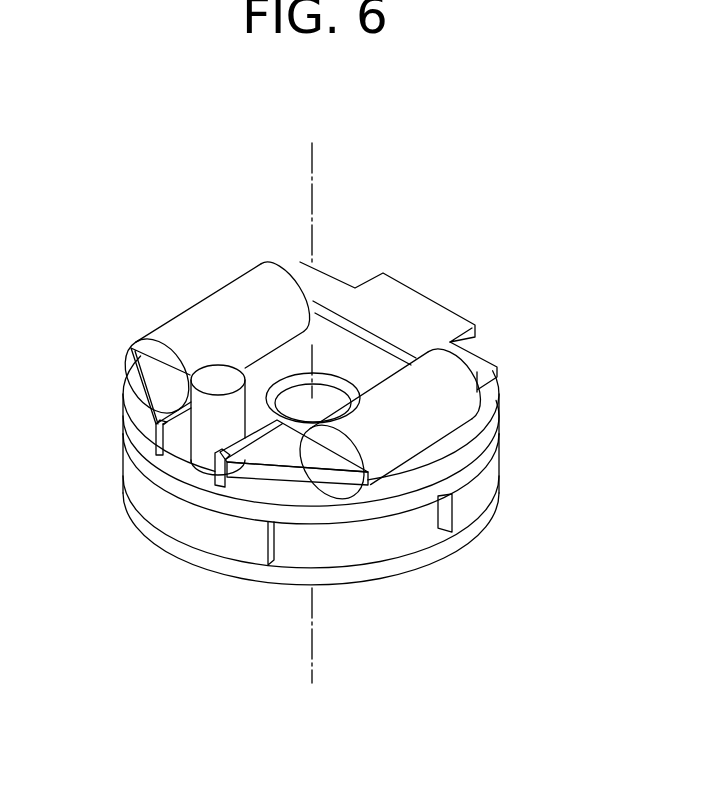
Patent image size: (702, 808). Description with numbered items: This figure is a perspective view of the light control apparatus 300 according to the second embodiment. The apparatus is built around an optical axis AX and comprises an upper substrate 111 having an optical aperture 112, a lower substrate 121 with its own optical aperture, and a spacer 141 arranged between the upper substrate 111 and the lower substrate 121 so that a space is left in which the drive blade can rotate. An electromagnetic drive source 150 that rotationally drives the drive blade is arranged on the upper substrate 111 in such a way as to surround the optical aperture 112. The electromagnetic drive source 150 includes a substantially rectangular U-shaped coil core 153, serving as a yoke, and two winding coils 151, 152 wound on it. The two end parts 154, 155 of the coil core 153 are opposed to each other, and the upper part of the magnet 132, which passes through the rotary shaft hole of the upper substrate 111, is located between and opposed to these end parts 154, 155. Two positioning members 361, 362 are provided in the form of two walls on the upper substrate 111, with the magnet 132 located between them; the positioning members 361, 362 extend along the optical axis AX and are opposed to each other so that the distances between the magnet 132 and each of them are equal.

The light control apparatus 300 is at (291, 751).
The optical axis AX is at (314, 168).
The upper substrate 111 is at (464, 445).
The optical aperture 112 is at (296, 386).
The lower substrate 121 is at (380, 540).
The magnet 132 is at (210, 366).
The spacer 141 is at (271, 537).
The electromagnetic drive source 150 is at (399, 268).
The winding coil 151 is at (212, 305).
The winding coil 152 is at (396, 445).
The coil core 153 is at (408, 303).
The end part 154 is at (163, 388).
The end part 155 is at (292, 453).
The positioning member 361 is at (155, 440).
The positioning member 362 is at (222, 478).